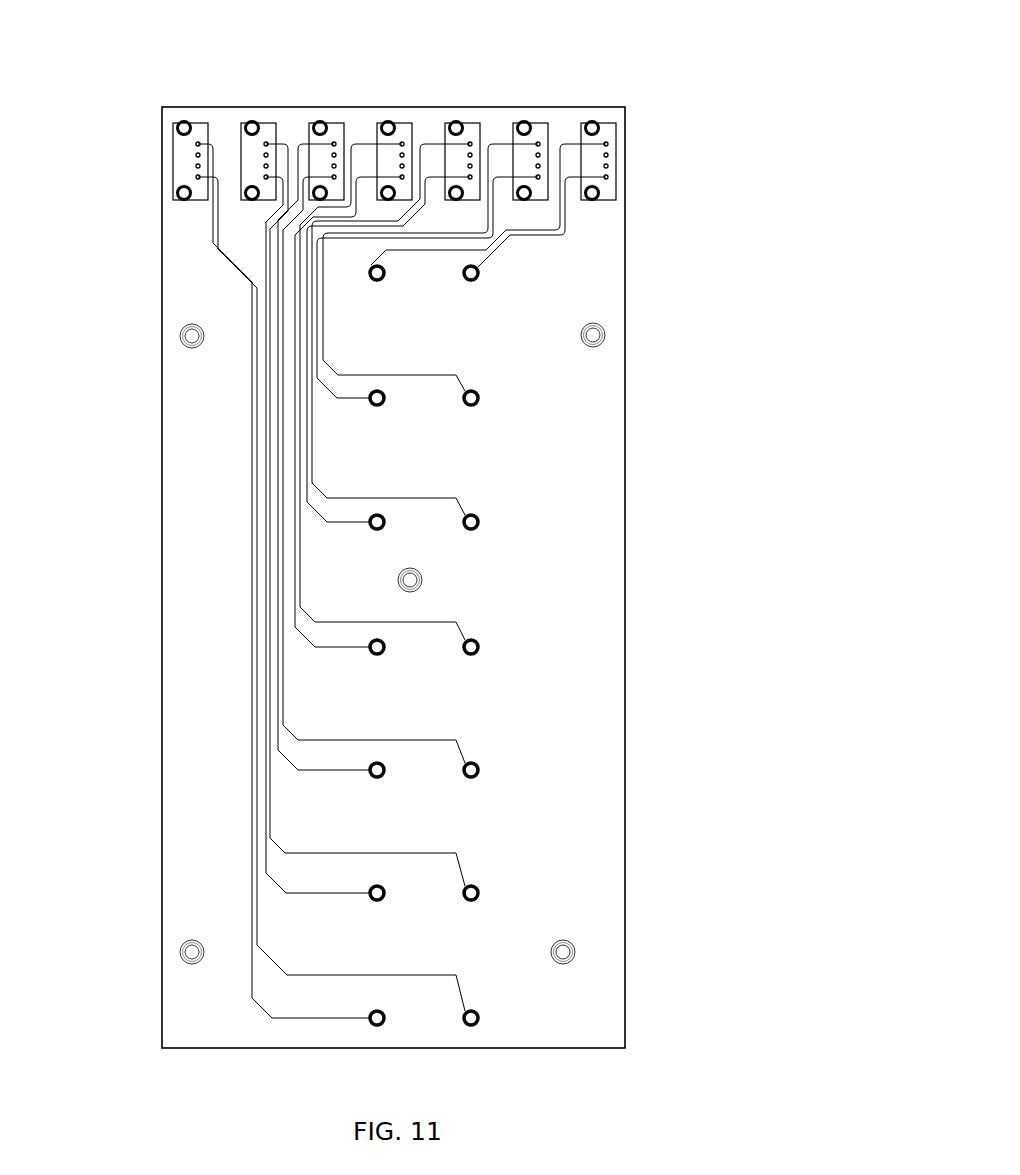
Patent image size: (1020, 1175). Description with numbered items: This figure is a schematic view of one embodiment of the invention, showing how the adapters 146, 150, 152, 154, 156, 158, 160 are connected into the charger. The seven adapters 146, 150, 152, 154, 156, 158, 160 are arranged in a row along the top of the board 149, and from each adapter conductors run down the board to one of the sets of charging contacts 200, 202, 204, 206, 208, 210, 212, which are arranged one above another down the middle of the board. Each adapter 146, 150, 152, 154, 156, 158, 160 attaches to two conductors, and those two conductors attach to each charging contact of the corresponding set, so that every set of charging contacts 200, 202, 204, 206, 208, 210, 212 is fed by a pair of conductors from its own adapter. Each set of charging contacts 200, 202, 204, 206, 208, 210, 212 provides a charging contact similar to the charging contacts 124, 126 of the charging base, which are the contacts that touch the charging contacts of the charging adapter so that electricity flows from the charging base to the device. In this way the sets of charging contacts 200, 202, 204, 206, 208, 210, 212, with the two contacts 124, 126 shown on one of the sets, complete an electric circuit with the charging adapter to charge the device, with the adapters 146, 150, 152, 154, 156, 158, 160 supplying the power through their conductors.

The printed circuit board 149 is at (190, 488).
The adapter 150 is at (177, 142).
The adapter 152 is at (259, 142).
The adapter 154 is at (334, 140).
The adapter 156 is at (406, 140).
The adapter 146 is at (470, 140).
The adapter 158 is at (540, 138).
The adapter 160 is at (607, 128).
The set of charging contacts 200 is at (505, 276).
The set of charging contacts 202 is at (505, 410).
The set of charging contacts 204 is at (505, 528).
The set of charging contacts 206 is at (389, 644).
The set of charging contacts 208 is at (505, 770).
The set of charging contacts 210 is at (505, 895).
The set of charging contacts 212 is at (505, 1020).
The charging contact 124 is at (370, 645).
The charging contact 126 is at (466, 649).